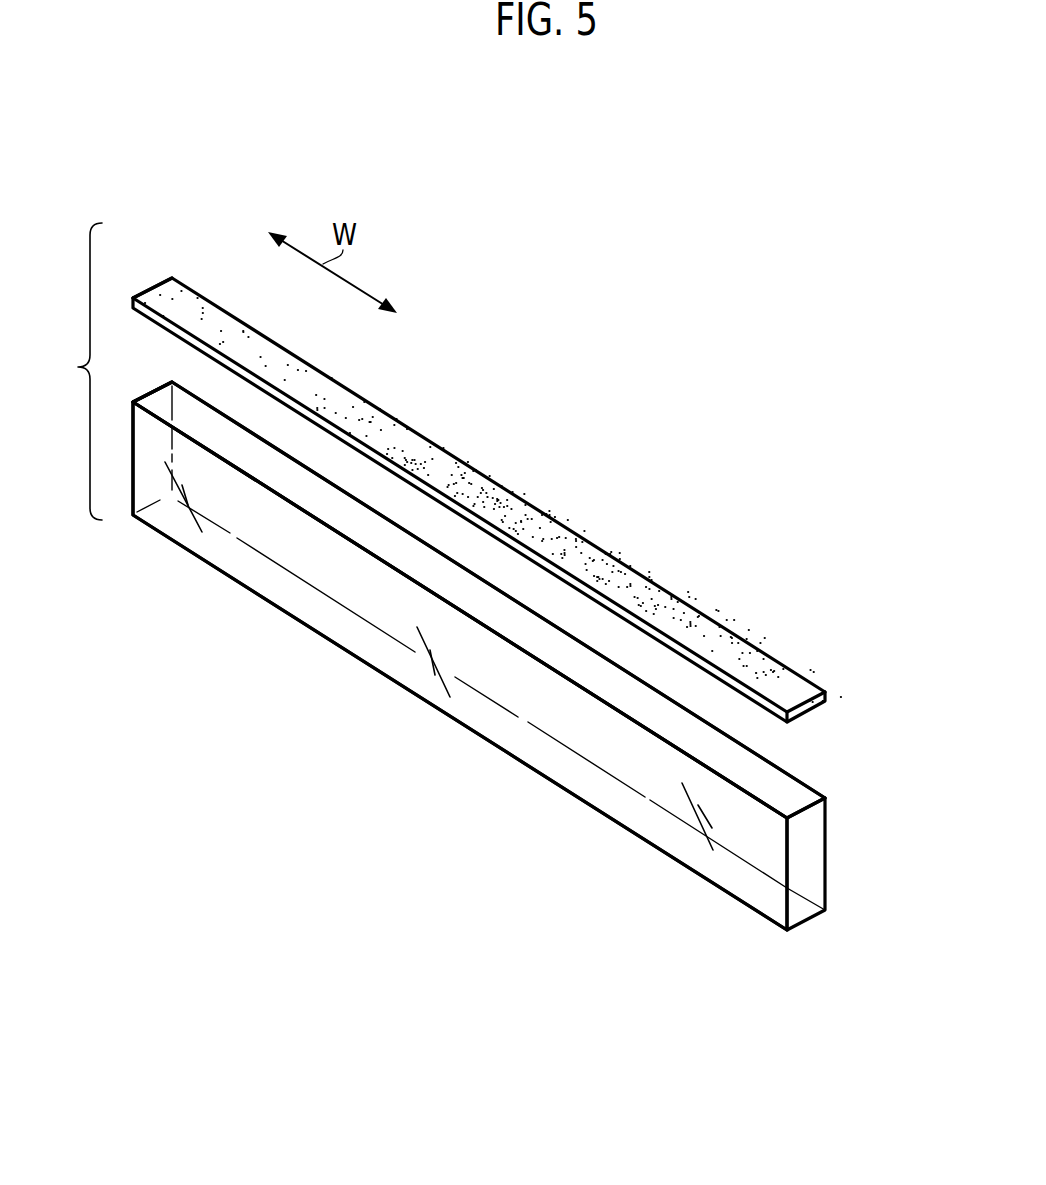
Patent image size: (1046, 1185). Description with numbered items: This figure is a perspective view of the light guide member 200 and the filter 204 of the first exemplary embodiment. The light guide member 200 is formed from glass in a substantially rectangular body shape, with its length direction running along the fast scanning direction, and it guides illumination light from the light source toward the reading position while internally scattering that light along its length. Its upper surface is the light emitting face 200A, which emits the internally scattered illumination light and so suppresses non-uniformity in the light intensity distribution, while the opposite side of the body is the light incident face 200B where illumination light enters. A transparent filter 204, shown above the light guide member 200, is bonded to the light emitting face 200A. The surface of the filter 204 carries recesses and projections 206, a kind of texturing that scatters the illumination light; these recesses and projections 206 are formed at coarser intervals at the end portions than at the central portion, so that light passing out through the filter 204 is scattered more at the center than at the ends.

The light guide member 200 is at (827, 862).
The light emitting face 200A is at (783, 783).
The light incident face 200B is at (760, 902).
The filter 204 is at (827, 697).
The recesses and projections 206 is at (707, 627).